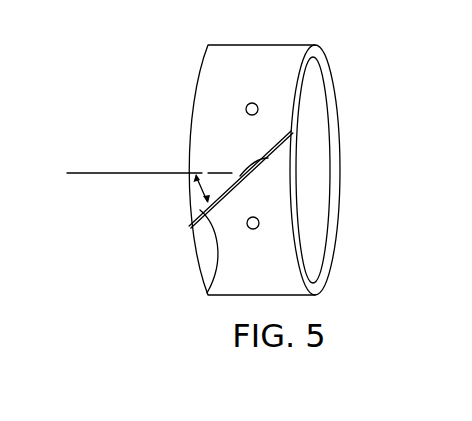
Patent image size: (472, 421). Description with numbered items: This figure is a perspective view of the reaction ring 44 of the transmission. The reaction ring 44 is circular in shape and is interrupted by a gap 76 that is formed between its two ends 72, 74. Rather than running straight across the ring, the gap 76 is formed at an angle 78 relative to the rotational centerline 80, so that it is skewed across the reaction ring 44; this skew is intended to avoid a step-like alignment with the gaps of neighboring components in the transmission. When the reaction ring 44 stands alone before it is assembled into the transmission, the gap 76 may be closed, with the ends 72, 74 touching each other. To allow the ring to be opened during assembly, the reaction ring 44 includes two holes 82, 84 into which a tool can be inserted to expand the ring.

The reaction ring 44 is at (176, 111).
The rotational centerline 80 is at (78, 173).
The end 72 is at (290, 148).
The gap 76 is at (268, 158).
The end 74 is at (207, 292).
The angle 78 is at (193, 190).
The hole 82 is at (258, 109).
The hole 84 is at (259, 223).